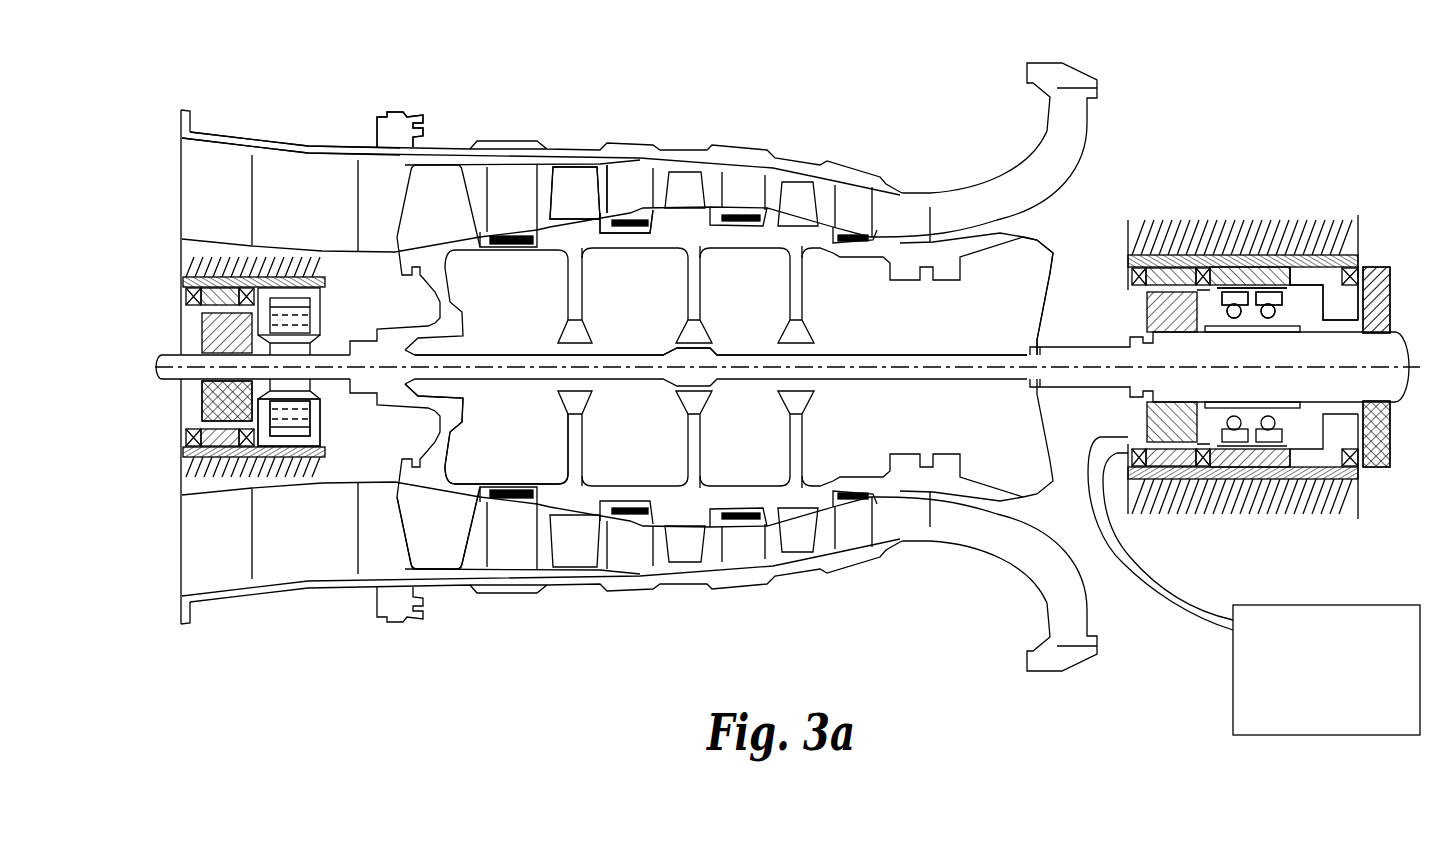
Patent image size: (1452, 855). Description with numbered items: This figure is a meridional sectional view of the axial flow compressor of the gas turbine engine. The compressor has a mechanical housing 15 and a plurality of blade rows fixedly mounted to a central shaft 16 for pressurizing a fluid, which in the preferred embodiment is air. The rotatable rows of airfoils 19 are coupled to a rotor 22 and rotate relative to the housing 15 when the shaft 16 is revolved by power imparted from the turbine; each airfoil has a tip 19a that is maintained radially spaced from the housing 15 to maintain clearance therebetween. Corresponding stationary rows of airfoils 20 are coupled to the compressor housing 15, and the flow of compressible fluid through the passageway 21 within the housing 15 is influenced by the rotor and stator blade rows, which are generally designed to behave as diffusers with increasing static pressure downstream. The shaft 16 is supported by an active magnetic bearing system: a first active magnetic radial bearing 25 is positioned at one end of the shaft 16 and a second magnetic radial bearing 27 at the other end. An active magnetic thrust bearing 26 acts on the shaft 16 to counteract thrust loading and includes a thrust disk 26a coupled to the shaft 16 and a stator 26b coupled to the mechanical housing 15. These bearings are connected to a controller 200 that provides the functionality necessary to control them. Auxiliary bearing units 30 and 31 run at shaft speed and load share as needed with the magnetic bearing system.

The mechanical housing 15 is at (443, 142).
The central shaft 16 is at (1053, 250).
The airfoils 19 is at (600, 120).
The tip 19a is at (570, 180).
The stationary rows of airfoils 20 is at (517, 558).
The passageway 21 is at (370, 170).
The rotor 22 is at (460, 421).
The first active magnetic radial bearing 25 is at (1100, 515).
The active magnetic thrust bearing 26 is at (1390, 420).
The thrust disk 26a is at (1380, 295).
The stator 26b is at (1353, 300).
The second magnetic radial bearing 27 is at (213, 410).
The auxiliary bearing unit 30 is at (1250, 292).
The auxiliary bearing unit 31 is at (310, 422).
The controller 200 is at (1414, 730).